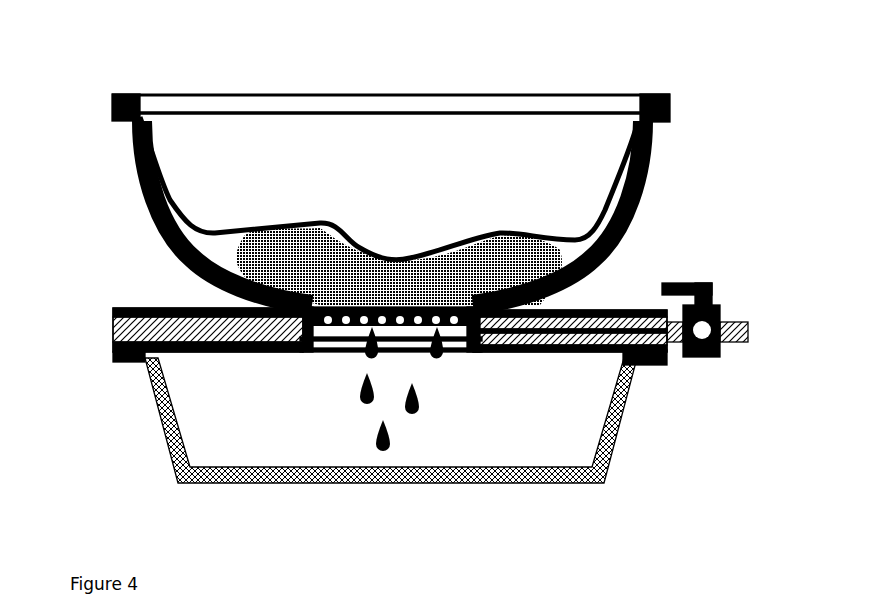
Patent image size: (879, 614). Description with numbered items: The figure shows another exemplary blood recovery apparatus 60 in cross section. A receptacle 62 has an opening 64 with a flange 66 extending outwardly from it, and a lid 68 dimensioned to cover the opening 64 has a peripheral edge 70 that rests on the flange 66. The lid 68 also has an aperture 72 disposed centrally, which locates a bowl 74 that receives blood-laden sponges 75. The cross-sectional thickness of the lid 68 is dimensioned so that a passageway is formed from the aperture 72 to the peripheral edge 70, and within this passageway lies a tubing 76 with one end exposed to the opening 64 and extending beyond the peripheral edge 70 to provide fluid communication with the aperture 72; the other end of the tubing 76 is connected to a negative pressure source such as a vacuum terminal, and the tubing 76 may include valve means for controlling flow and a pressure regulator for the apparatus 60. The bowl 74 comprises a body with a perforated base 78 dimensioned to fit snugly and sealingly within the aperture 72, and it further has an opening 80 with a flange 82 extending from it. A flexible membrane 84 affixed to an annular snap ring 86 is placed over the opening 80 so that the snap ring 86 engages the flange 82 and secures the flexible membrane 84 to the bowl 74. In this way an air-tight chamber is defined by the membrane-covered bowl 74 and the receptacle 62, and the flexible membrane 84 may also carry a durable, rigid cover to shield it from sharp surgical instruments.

The blood recovery apparatus 60 is at (405, 556).
The receptacle 62 is at (163, 440).
The opening 64 is at (200, 352).
The flange 66 is at (145, 362).
The lid 68 is at (135, 308).
The peripheral edge 70 is at (113, 327).
The aperture 72 is at (405, 337).
The bowl 74 is at (648, 193).
The blood-laden sponges 75 is at (285, 232).
The tubing 76 is at (572, 310).
The perforated base 78 is at (320, 345).
The opening 80 is at (460, 118).
The flange 82 is at (670, 124).
The flexible membrane 84 is at (167, 190).
The annular snap ring 86 is at (668, 94).